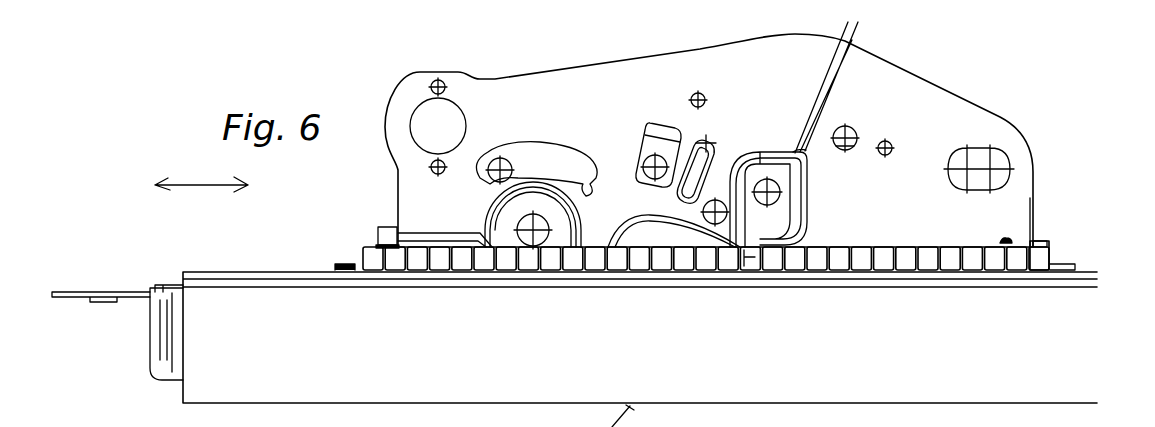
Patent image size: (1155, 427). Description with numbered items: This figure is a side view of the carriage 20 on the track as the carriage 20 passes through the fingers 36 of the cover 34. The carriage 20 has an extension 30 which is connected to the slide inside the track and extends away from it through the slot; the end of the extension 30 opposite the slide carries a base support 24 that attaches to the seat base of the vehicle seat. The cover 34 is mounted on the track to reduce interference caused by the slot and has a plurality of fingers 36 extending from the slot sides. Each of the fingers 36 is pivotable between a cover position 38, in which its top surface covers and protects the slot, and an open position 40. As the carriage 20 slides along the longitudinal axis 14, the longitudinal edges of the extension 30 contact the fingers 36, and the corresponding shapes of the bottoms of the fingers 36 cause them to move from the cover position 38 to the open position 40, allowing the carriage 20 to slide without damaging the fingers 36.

The longitudinal axis 14 is at (196, 182).
The carriage 20 is at (709, 135).
The base support 24 is at (588, 62).
The extension 30 is at (1030, 243).
The cover 34 is at (256, 244).
The fingers 36 is at (377, 258).
The cover position 38 is at (338, 254).
The open position 40 is at (836, 232).